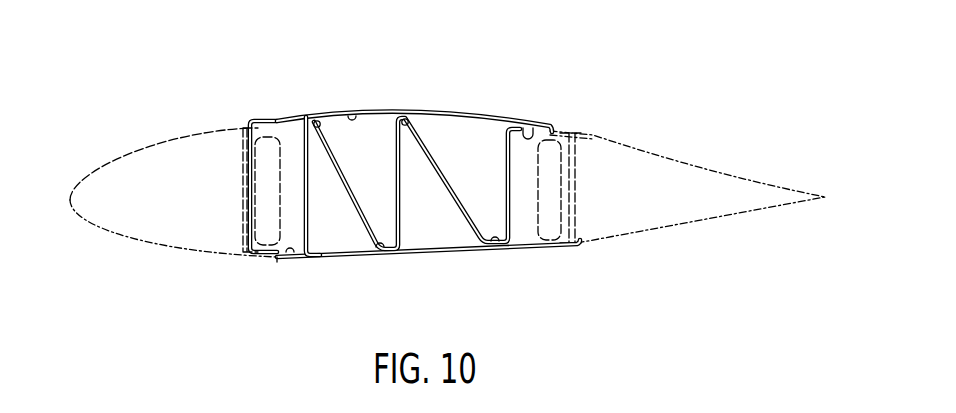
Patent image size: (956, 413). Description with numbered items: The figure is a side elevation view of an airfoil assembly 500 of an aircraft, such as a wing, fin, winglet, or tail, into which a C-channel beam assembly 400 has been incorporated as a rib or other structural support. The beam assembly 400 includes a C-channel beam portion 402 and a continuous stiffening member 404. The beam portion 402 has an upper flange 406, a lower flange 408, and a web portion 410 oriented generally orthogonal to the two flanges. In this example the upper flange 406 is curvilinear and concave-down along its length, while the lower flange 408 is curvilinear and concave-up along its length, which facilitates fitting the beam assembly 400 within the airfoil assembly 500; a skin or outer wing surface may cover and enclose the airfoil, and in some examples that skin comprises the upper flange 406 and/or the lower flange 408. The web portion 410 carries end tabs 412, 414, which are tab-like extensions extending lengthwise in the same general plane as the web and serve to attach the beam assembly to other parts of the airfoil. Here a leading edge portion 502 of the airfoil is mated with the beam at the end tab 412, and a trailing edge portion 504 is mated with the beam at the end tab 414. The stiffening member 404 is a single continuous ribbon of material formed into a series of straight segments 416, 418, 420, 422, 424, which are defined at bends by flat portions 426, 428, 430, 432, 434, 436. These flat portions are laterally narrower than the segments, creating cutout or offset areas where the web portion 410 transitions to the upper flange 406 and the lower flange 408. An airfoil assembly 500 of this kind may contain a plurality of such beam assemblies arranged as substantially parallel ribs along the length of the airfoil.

The airfoil assembly 500 is at (118, 100).
The leading edge portion 502 is at (150, 250).
The trailing edge portion 504 is at (735, 172).
The C-channel beam assembly 400 is at (281, 88).
The C-channel beam portion 402 is at (485, 130).
The continuous stiffening member 404 is at (428, 124).
The upper flange 406 is at (353, 112).
The lower flange 408 is at (328, 258).
The web portion 410 is at (407, 188).
The end tab 412 is at (264, 192).
The end tab 414 is at (552, 198).
The straight segment 416 is at (312, 197).
The straight segment 418 is at (336, 152).
The straight segment 420 is at (393, 177).
The straight segment 422 is at (458, 214).
The straight segment 424 is at (506, 177).
The flat portion 426 is at (283, 258).
The flat portion 428 is at (317, 120).
The flat portion 430 is at (380, 256).
The flat portion 432 is at (408, 118).
The flat portion 434 is at (490, 252).
The flat portion 436 is at (528, 124).